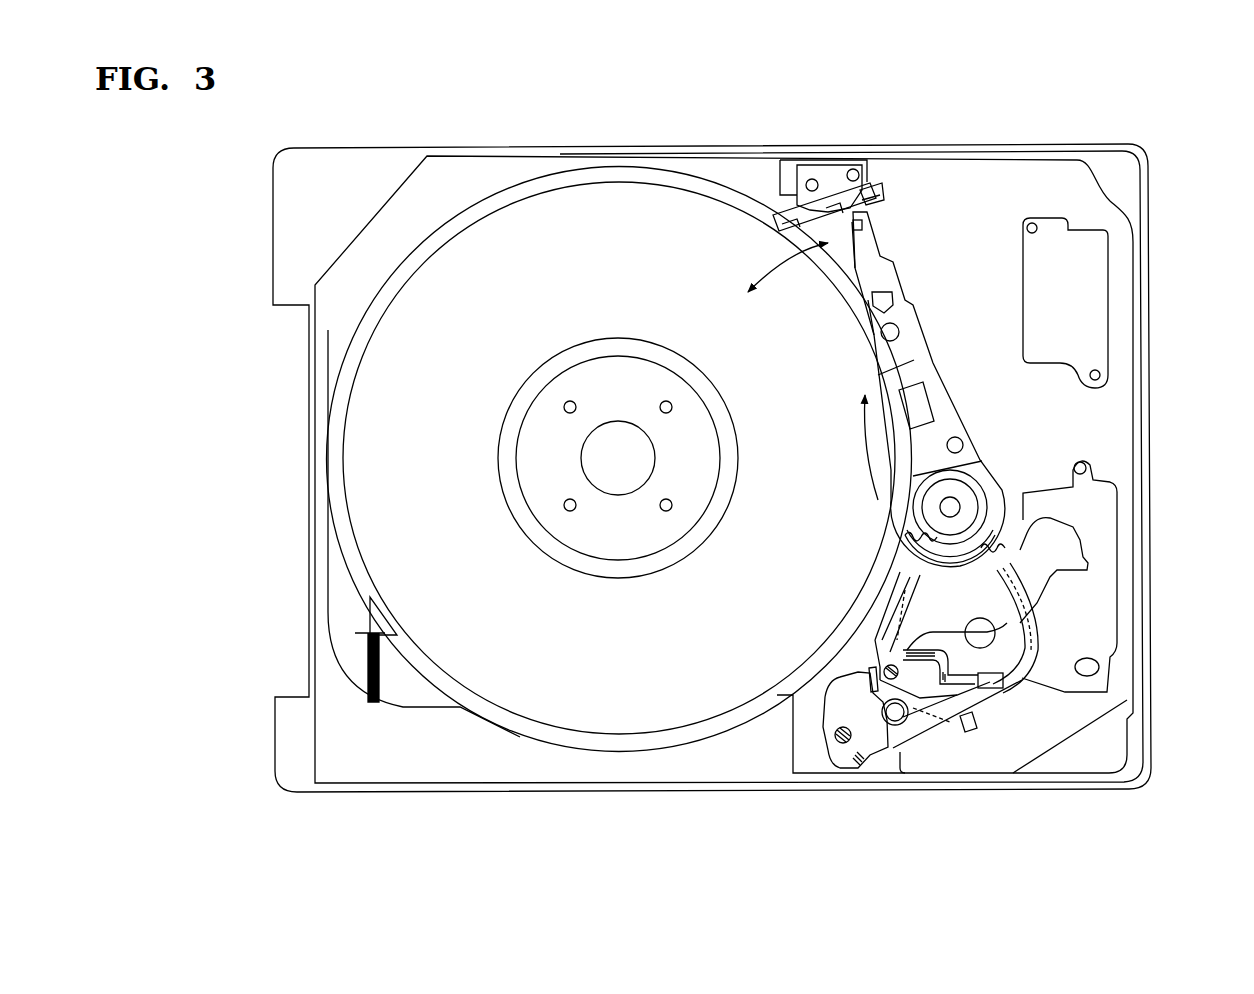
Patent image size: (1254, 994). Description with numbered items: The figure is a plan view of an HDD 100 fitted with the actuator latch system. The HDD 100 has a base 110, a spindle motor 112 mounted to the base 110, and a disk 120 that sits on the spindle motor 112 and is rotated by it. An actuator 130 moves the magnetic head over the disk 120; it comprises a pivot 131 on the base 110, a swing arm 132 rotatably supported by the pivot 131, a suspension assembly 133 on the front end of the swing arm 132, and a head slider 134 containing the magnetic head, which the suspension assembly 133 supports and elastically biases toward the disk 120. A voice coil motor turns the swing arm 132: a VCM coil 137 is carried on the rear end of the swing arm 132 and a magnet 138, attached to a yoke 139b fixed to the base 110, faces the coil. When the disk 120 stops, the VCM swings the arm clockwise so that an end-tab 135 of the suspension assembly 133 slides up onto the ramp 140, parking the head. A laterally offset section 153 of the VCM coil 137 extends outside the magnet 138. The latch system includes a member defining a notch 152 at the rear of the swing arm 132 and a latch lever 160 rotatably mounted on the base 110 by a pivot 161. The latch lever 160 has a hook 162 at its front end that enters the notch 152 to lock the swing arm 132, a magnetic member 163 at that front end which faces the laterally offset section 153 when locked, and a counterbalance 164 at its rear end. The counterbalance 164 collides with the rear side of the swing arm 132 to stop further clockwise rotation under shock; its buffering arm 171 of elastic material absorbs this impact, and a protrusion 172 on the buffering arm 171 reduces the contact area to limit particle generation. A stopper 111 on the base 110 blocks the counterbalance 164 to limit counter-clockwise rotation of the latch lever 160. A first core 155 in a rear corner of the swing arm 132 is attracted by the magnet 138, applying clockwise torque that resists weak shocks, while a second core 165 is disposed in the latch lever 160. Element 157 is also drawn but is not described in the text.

The HDD 100 is at (762, 480).
The base 110 is at (697, 768).
The stopper 111 is at (877, 773).
The spindle motor 112 is at (540, 432).
The disk 120 is at (619, 426).
The actuator 130 is at (959, 381).
The pivot 131 is at (960, 505).
The swing arm 132 is at (937, 397).
The suspension assembly 133 is at (870, 250).
The head slider 134 is at (862, 226).
The end-tab 135 is at (848, 180).
The VCM coil 137 is at (995, 632).
The magnet 138 is at (1077, 548).
The yoke 139b is at (1097, 500).
The ramp 140 is at (792, 175).
The notch 152 is at (972, 730).
The laterally offset section 153 is at (995, 688).
The first core 155 is at (893, 665).
The latch stopper 157 is at (855, 765).
The latch lever 160 is at (940, 745).
The pivot 161 is at (895, 725).
The hook 162 is at (985, 690).
The magnetic member 163 is at (1005, 680).
The counterbalance 164 is at (830, 702).
The second core 165 is at (843, 745).
The buffering arm 171 is at (884, 670).
The protrusion 172 is at (868, 668).